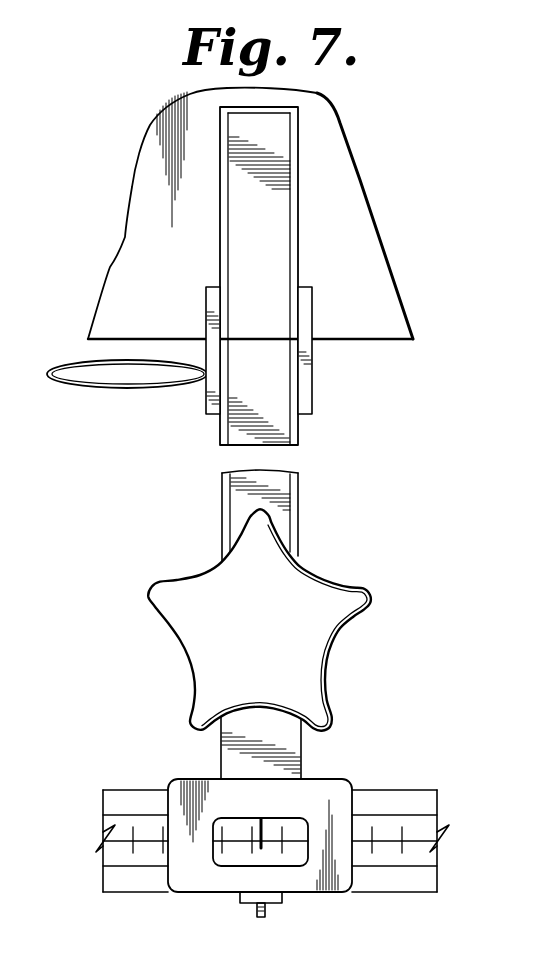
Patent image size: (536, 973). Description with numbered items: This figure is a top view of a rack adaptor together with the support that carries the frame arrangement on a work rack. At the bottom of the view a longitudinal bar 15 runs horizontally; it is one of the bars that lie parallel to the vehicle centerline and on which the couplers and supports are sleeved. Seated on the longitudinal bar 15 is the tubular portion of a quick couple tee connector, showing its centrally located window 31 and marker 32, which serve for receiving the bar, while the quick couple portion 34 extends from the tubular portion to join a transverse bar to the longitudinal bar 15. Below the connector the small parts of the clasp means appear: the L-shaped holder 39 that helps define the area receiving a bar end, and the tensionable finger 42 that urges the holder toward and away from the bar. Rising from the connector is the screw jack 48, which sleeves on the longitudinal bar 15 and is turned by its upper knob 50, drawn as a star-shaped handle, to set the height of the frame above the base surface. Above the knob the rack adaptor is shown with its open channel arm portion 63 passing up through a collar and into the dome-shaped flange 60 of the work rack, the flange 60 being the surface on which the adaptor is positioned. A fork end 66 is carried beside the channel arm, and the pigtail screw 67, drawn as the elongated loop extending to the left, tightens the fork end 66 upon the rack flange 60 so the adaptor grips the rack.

The longitudinal bar 15 is at (375, 790).
The window 31 is at (275, 818).
The marker 32 is at (259, 830).
The quick couple portion 34 is at (190, 779).
The L-shaped holder 39 is at (282, 903).
The tensionable finger 42 is at (257, 911).
The screw jack 48 is at (302, 745).
The upper knob 50 is at (190, 669).
The flange 60 is at (129, 232).
The open channel arm portion 63 is at (298, 226).
The fork end 66 is at (312, 369).
The pigtail screw 67 is at (105, 389).